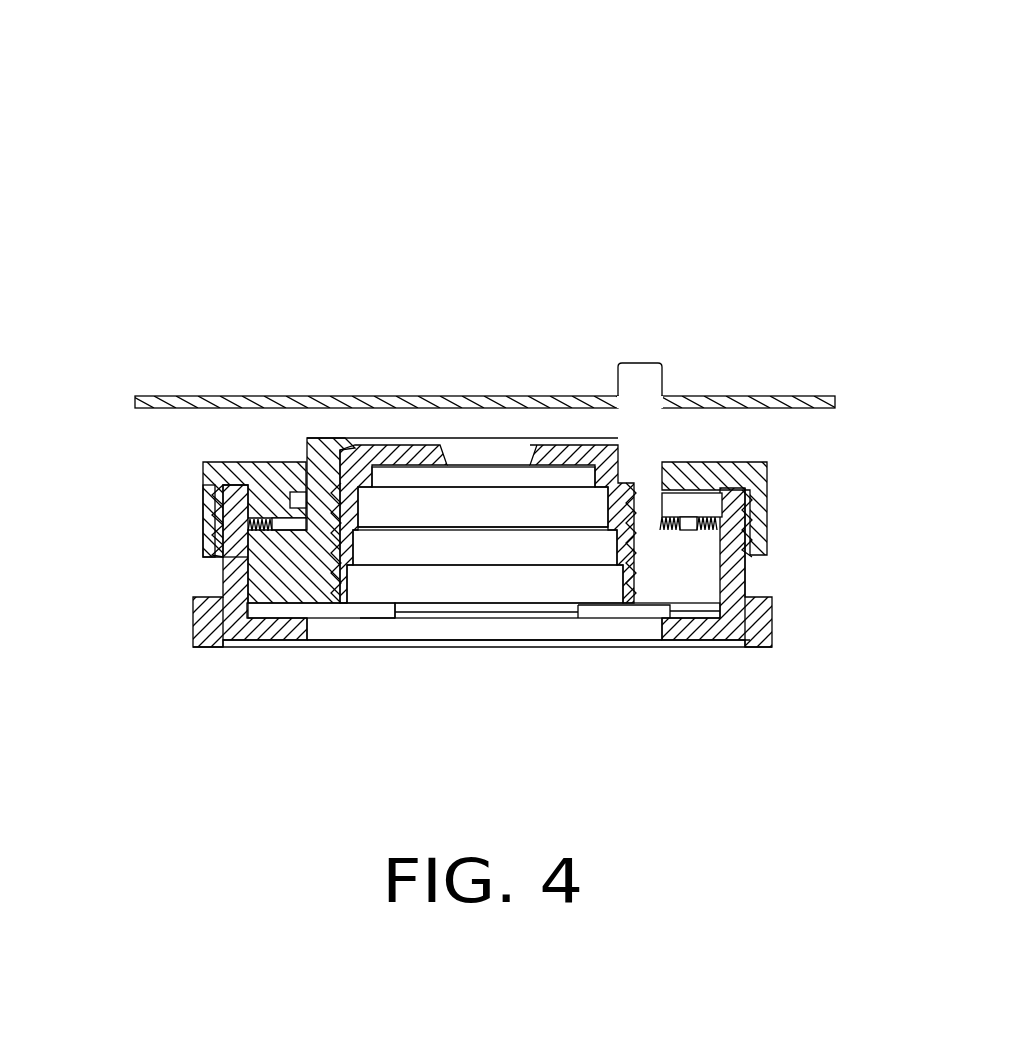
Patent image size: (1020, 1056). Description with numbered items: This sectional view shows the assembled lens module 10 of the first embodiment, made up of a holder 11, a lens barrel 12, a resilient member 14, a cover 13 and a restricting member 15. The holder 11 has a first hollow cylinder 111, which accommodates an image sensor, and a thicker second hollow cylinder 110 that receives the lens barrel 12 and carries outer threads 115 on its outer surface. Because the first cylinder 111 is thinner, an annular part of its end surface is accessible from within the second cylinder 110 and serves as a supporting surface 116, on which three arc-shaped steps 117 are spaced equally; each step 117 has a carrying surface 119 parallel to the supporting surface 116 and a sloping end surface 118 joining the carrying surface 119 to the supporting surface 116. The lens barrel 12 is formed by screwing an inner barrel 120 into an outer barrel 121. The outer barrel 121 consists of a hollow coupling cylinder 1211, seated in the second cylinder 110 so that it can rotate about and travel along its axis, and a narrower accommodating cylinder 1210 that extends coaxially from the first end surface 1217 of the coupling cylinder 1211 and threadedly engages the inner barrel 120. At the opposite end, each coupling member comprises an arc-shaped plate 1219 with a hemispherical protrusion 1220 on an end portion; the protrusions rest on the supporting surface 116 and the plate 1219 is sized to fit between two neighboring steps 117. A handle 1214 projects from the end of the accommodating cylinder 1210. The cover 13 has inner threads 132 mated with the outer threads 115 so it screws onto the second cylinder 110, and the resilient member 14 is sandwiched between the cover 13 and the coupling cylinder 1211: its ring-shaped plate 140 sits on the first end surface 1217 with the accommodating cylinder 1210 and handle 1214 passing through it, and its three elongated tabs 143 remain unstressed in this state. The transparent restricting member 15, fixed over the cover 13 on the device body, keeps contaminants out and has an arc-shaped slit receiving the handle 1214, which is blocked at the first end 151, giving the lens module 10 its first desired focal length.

The lens module 10 is at (508, 66).
The holder 11 is at (73, 578).
The second hollow cylinder 110 is at (237, 583).
The first hollow cylinder 111 is at (213, 623).
The outer threads 115 is at (743, 492).
The supporting surface 116 is at (514, 630).
The arc-shaped step 117 is at (318, 608).
The sloping end surface 118 is at (382, 632).
The carrying surface 119 is at (342, 618).
The lens barrel 12 is at (448, 226).
The inner barrel 120 is at (418, 445).
The outer barrel 121 is at (380, 274).
The accommodating cylinder 1210 is at (337, 505).
The coupling cylinder 1211 is at (300, 560).
The handle 1214 is at (636, 366).
The first end surface 1217 is at (243, 572).
The arc-shaped plate 1219 is at (543, 630).
The hemispherical protrusion 1220 is at (398, 612).
The cover 13 is at (265, 464).
The inner threads 132 is at (740, 490).
The resilient member 14 is at (116, 463).
The ring-shaped plate 140 is at (250, 525).
The elongated tab 143 is at (238, 496).
The restricting member 15 is at (165, 398).
The first end 151 is at (664, 394).